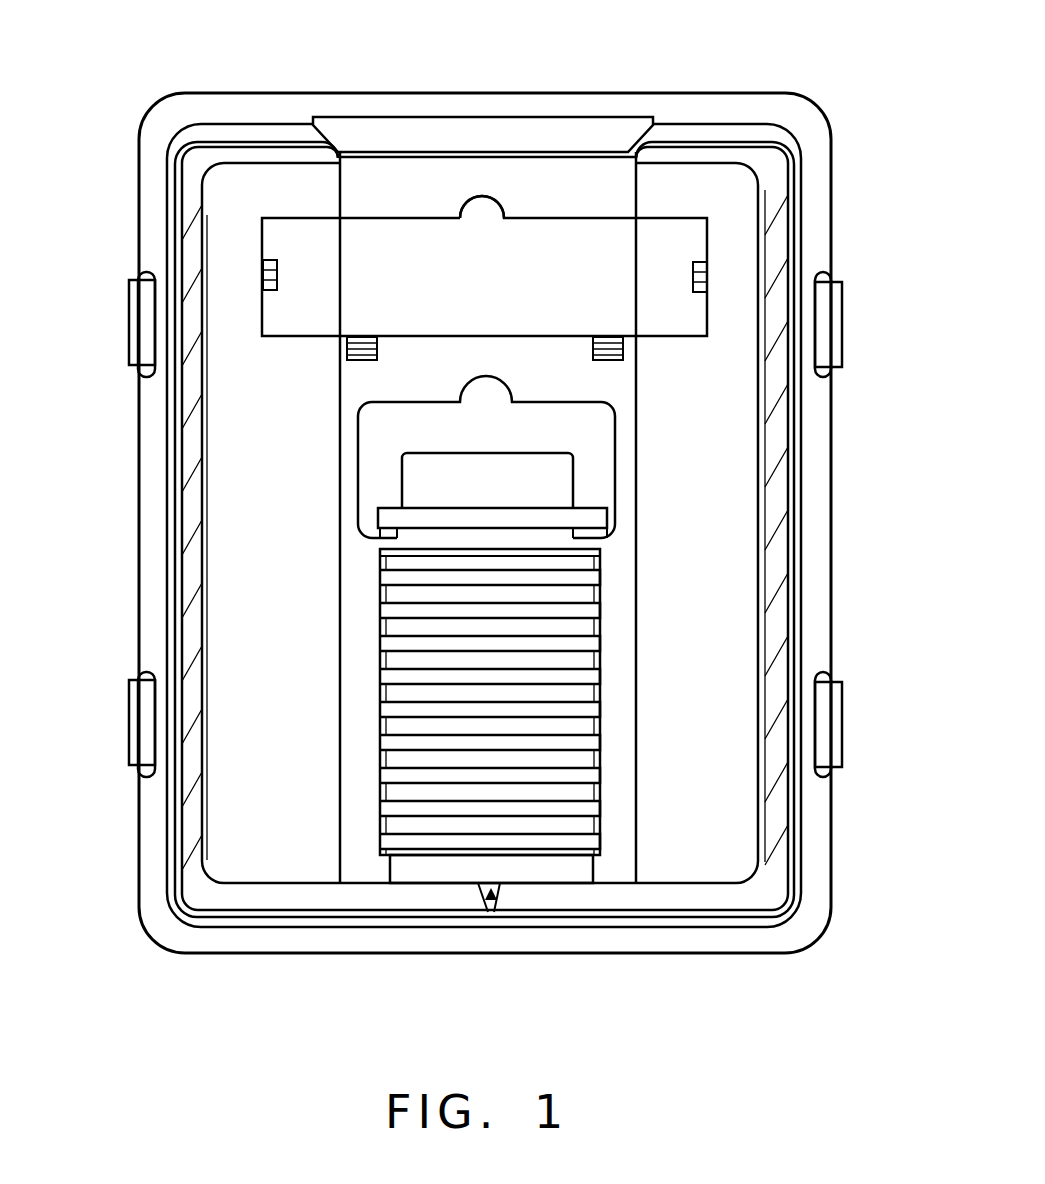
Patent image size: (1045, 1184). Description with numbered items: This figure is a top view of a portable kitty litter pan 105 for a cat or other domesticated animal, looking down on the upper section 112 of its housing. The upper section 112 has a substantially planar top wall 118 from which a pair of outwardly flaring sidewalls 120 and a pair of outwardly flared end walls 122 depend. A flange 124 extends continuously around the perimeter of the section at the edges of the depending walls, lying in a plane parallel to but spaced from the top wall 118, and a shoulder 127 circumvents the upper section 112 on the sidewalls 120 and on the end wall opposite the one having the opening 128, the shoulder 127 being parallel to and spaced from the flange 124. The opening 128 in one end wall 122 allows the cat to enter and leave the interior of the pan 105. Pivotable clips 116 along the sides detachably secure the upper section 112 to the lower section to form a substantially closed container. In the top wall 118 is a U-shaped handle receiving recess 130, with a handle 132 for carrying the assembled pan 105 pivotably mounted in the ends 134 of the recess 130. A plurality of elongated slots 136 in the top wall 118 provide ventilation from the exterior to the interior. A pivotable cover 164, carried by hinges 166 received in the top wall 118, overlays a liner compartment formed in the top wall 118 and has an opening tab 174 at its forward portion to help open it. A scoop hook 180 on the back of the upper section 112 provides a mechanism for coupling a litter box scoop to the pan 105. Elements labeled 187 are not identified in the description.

The portable kitty litter pan 105 is at (280, 960).
The upper section 112 is at (692, 868).
The pivotable clips 116 is at (128, 325).
The top wall 118 is at (286, 765).
The sidewalls 120 is at (190, 497).
The end walls 122 is at (278, 152).
The flange 124 is at (152, 572).
The shoulder 127 is at (165, 888).
The opening 128 is at (617, 135).
The handle receiving recess 130 is at (548, 443).
The handle 132 is at (517, 512).
The ends of the recess 134 is at (372, 540).
The elongated slots 136 is at (595, 583).
The pivotable cover 164 is at (478, 292).
The hinges 166 is at (345, 352).
The opening tab 174 is at (488, 212).
The scoop hook 180 is at (503, 918).
The tab 187 is at (278, 277).